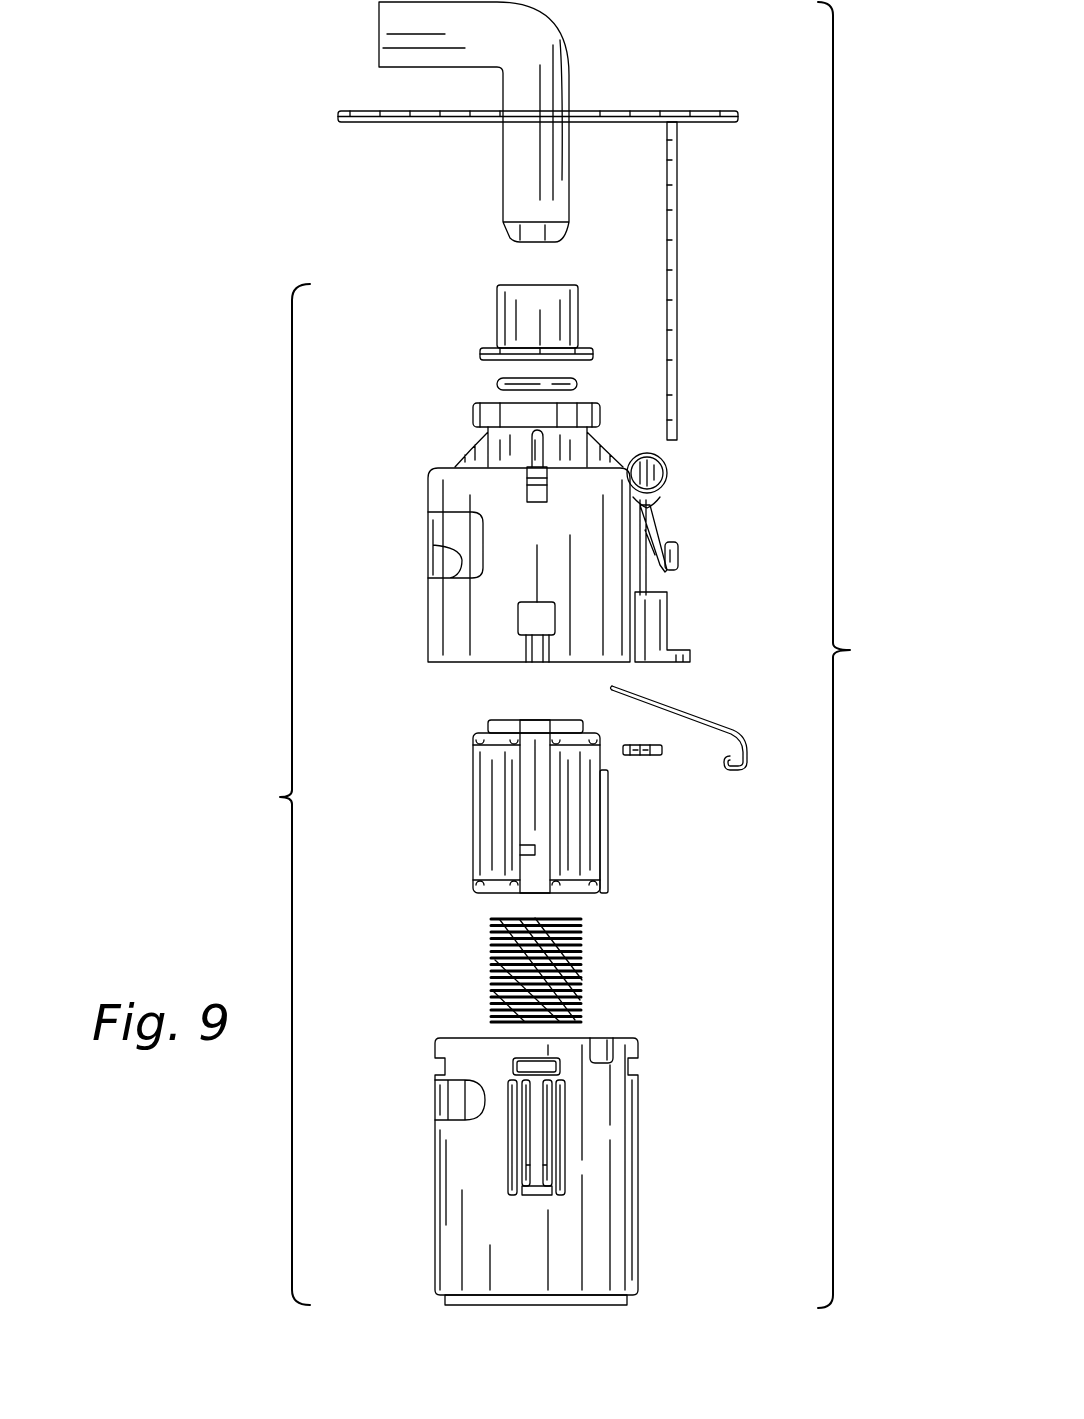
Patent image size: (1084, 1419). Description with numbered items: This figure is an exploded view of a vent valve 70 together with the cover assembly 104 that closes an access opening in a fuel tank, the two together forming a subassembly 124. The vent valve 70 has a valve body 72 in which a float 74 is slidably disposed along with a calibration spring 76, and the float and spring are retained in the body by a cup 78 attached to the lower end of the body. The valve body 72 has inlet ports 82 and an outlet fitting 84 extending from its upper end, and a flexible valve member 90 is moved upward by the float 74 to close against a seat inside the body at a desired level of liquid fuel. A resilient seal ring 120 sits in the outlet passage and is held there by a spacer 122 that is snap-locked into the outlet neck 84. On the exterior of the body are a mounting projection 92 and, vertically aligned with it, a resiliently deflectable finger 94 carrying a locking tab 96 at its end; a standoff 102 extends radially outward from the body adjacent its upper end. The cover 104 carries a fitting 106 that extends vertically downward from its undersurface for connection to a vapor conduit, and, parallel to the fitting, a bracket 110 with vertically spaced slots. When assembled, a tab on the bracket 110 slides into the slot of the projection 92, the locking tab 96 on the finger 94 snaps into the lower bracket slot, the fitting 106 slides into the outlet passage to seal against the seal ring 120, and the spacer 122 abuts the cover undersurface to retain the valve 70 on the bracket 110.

The vent valve 70 is at (277, 794).
The valve body 72 is at (428, 636).
The float 74 is at (473, 822).
The calibration spring 76 is at (490, 972).
The cup 78 is at (435, 1210).
The inlet ports 82 is at (456, 578).
The outlet fitting 84 is at (475, 414).
The flexible valve member 90 is at (700, 720).
The projection 92 is at (667, 620).
The resiliently deflectable finger 94 is at (667, 517).
The locking tab 96 is at (678, 556).
The standoff 102 is at (667, 473).
The cover assembly 104 is at (623, 111).
The fitting 106 is at (515, 188).
The bracket 110 is at (677, 300).
The resilient seal ring 120 is at (497, 387).
The spacer 122 is at (497, 315).
The subassembly 124 is at (859, 655).